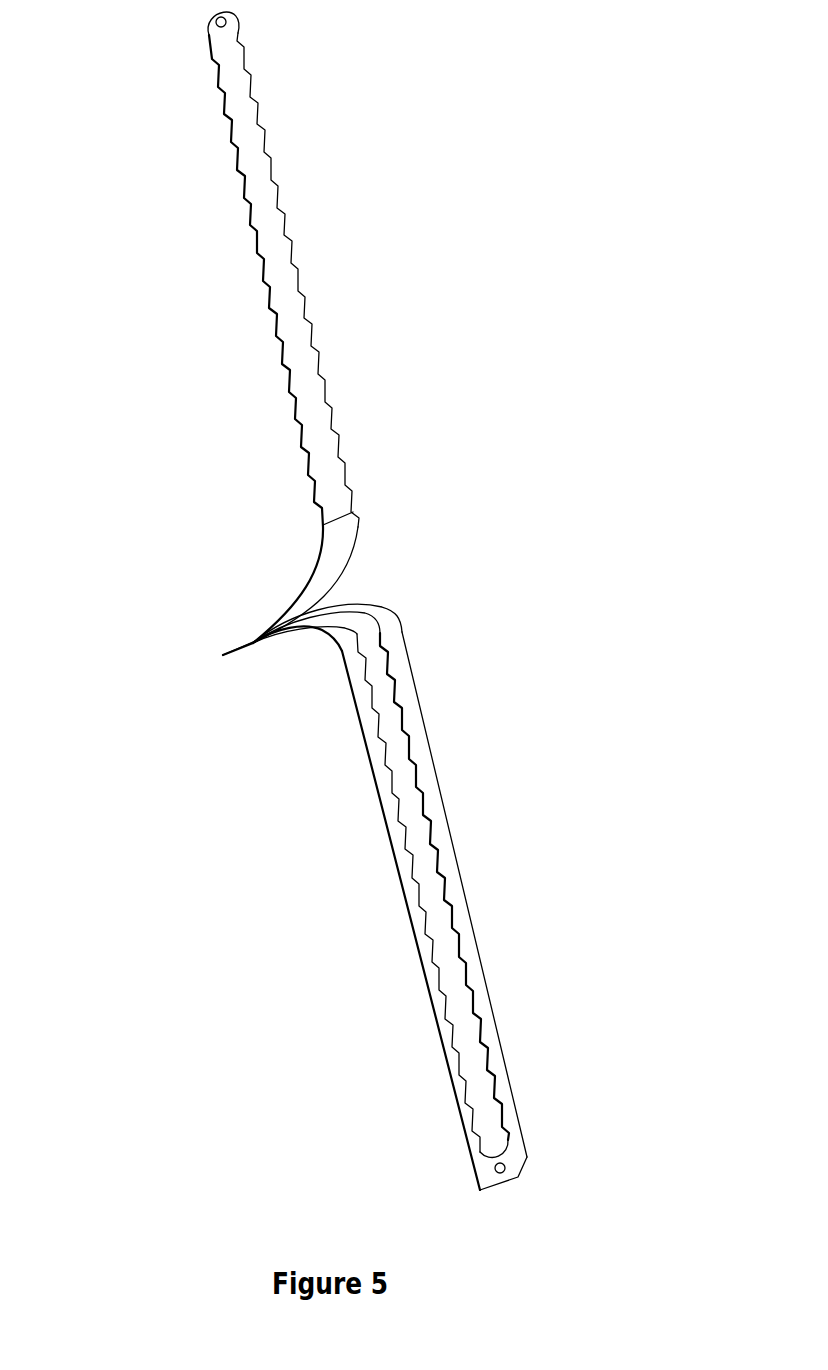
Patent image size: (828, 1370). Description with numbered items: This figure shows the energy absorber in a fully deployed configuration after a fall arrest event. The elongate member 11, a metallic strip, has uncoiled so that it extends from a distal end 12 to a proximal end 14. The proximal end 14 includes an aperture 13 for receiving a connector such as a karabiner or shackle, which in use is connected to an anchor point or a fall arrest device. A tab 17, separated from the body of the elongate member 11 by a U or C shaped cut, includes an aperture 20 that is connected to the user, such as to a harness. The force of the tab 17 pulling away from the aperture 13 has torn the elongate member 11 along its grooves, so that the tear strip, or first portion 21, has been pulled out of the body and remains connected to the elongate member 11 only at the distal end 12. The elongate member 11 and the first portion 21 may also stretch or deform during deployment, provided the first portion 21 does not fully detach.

The elongate member 11 is at (450, 860).
The distal end 12 is at (252, 644).
The aperture 13 is at (500, 1168).
The proximal end 14 is at (527, 1158).
The tab 17 is at (206, 30).
The aperture 20 is at (224, 23).
The first portion 21 is at (292, 328).